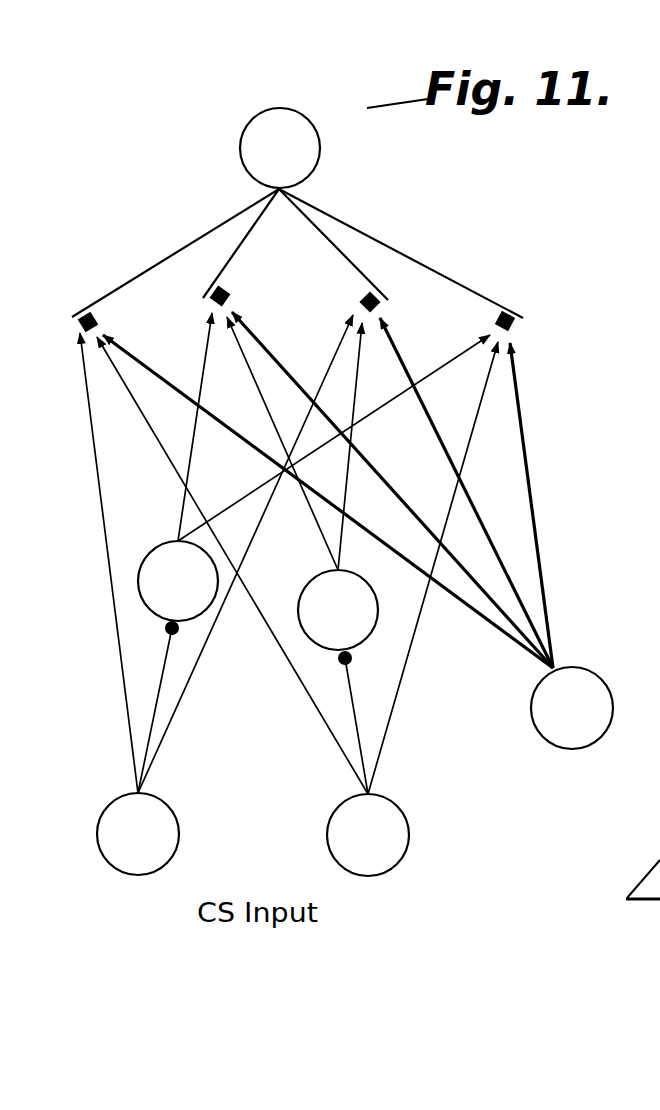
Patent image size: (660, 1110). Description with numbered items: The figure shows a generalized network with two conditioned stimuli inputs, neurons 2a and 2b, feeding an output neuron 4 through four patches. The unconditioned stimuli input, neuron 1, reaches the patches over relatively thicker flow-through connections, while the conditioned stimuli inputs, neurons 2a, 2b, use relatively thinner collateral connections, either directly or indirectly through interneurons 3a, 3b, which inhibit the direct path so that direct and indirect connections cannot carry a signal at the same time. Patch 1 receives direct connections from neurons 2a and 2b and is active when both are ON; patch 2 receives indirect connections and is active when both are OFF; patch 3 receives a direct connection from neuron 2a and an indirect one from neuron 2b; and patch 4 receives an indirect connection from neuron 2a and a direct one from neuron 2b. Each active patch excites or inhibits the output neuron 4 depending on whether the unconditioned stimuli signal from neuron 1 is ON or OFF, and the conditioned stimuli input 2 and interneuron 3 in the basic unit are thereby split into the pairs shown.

The output neuron 4 is at (387, 219).
The unconditioned stimuli input neuron 1 is at (340, 520).
The conditioned stimuli input neuron 2 is at (191, 292).
The interneuron 3 is at (348, 293).
The interneuron 3a is at (178, 588).
The interneuron 3b is at (338, 617).
The conditioned stimuli input neuron 2a is at (138, 834).
The conditioned stimuli input neuron 2b is at (368, 835).